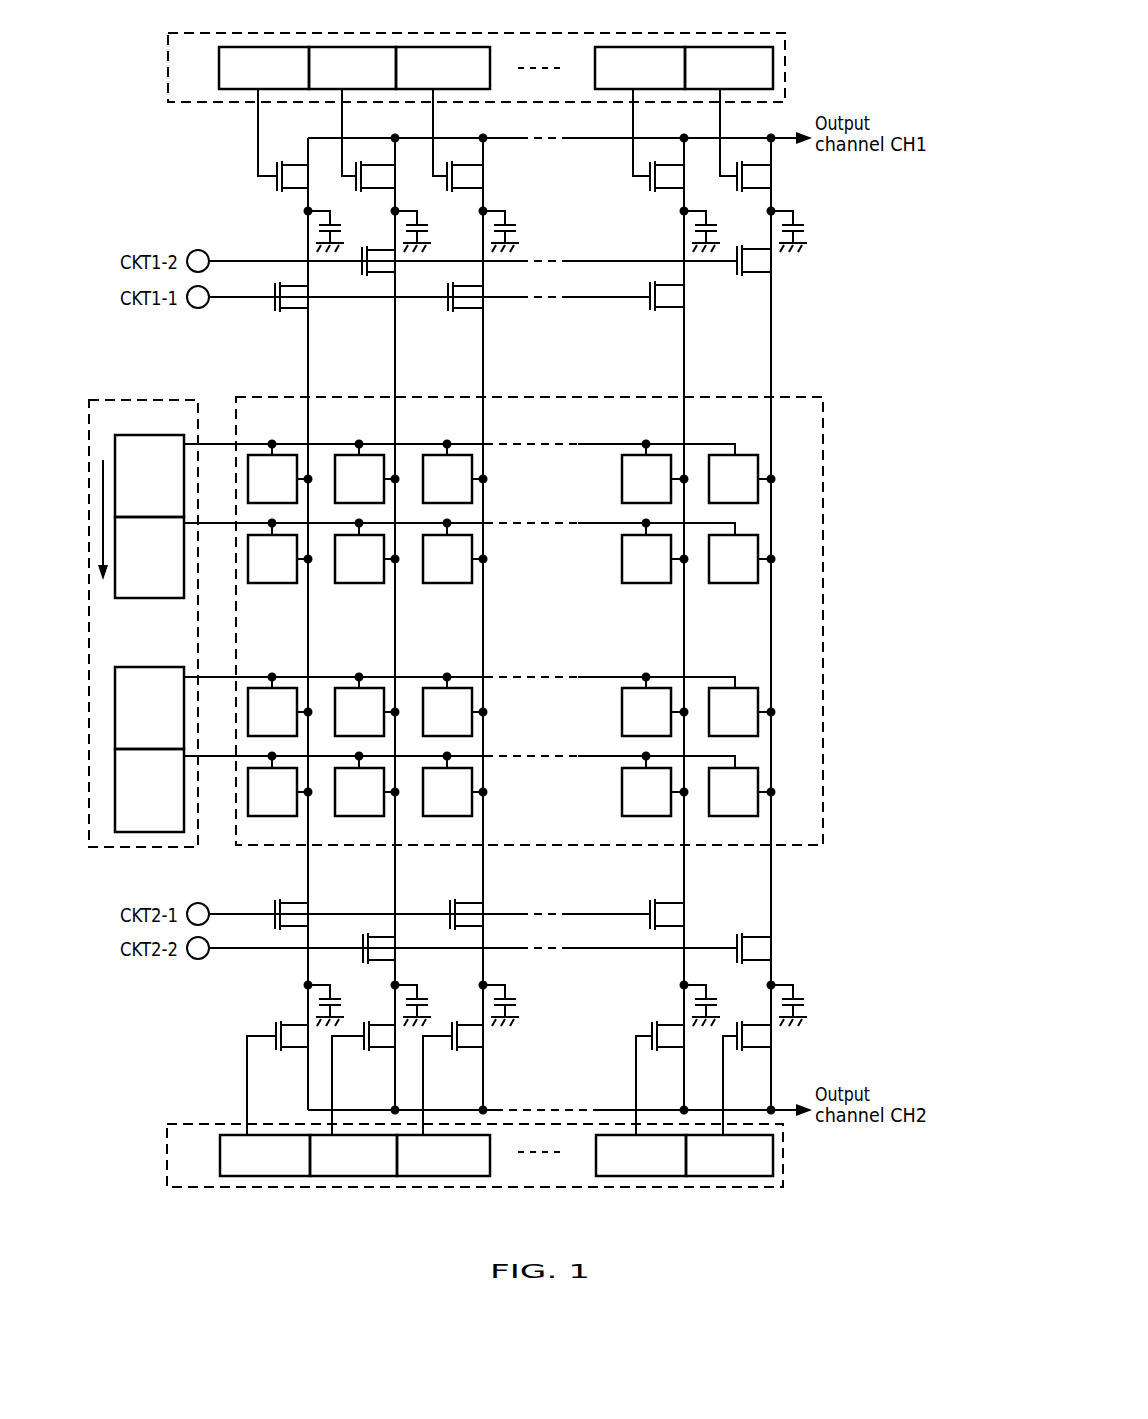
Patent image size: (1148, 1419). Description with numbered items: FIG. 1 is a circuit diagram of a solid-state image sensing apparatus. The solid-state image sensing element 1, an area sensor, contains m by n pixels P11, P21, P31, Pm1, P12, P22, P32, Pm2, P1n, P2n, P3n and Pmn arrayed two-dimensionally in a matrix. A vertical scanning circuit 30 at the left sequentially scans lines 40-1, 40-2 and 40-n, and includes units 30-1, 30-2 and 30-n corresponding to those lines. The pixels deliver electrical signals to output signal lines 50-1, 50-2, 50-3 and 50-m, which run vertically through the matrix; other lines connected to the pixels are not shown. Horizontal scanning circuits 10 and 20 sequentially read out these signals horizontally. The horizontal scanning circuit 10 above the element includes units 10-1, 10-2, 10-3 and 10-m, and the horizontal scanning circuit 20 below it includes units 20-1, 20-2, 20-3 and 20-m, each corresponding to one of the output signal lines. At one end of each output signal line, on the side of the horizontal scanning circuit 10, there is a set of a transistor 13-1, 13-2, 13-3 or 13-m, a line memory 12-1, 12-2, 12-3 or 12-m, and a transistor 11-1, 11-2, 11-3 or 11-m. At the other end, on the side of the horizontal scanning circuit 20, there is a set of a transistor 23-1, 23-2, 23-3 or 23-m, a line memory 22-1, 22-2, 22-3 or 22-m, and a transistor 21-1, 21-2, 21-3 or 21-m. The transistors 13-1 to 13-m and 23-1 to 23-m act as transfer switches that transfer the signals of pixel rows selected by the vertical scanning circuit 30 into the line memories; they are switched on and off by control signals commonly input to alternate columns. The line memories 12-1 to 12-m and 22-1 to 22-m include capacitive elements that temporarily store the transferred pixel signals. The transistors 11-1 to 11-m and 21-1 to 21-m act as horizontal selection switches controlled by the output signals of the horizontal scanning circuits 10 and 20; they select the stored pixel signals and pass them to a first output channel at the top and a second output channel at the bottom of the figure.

The solid-state image sensing element 1 is at (825, 478).
The horizontal scanning circuit 10 is at (200, 104).
The unit 10-1 is at (269, 47).
The unit 10-2 is at (356, 47).
The unit 10-3 is at (448, 47).
The unit 10-m is at (722, 47).
The transistor 11-1 is at (282, 164).
The transistor 11-2 is at (307, 126).
The transistor 11-3 is at (455, 160).
The transistor 11-m is at (740, 159).
The line memory 12-1 is at (334, 231).
The line memory 12-2 is at (420, 231).
The line memory 12-3 is at (509, 231).
The line memory 12-m is at (802, 223).
The transistor 13-1 is at (310, 309).
The transistor 13-2 is at (401, 271).
The transistor 13-3 is at (482, 309).
The transistor 13-m is at (780, 262).
The horizontal scanning circuit 20 is at (185, 1122).
The unit 20-1 is at (266, 1178).
The unit 20-2 is at (345, 1178).
The unit 20-3 is at (410, 1178).
The unit 20-m is at (760, 1178).
The transistor 21-1 is at (282, 1050).
The transistor 21-2 is at (368, 1050).
The transistor 21-3 is at (454, 1050).
The transistor 21-m is at (750, 1013).
The line memory 22-1 is at (336, 999).
The line memory 22-2 is at (423, 994).
The line memory 22-3 is at (511, 994).
The line memory 22-m is at (807, 1004).
The transistor 23-1 is at (313, 910).
The transistor 23-2 is at (390, 947).
The transistor 23-3 is at (487, 905).
The transistor 23-m is at (775, 942).
The vertical scanning circuit 30 is at (105, 398).
The unit 30-1 is at (171, 435).
The unit 30-2 is at (115, 575).
The unit 30-n is at (157, 832).
The line 40-1 is at (513, 441).
The line 40-2 is at (513, 521).
The line 40-n is at (514, 760).
The output signal line 50-1 is at (308, 372).
The output signal line 50-2 is at (395, 372).
The output signal line 50-3 is at (483, 372).
The output signal line 50-m is at (771, 372).
The pixel P11 is at (290, 455).
The pixel P21 is at (377, 455).
The pixel P31 is at (467, 455).
The pixel Pm1 is at (745, 455).
The pixel P12 is at (274, 583).
The pixel P22 is at (361, 583).
The pixel P32 is at (449, 583).
The pixel Pm2 is at (734, 583).
The pixel P1n is at (274, 817).
The pixel P2n is at (347, 817).
The pixel P3n is at (447, 817).
The pixel Pmn is at (737, 817).